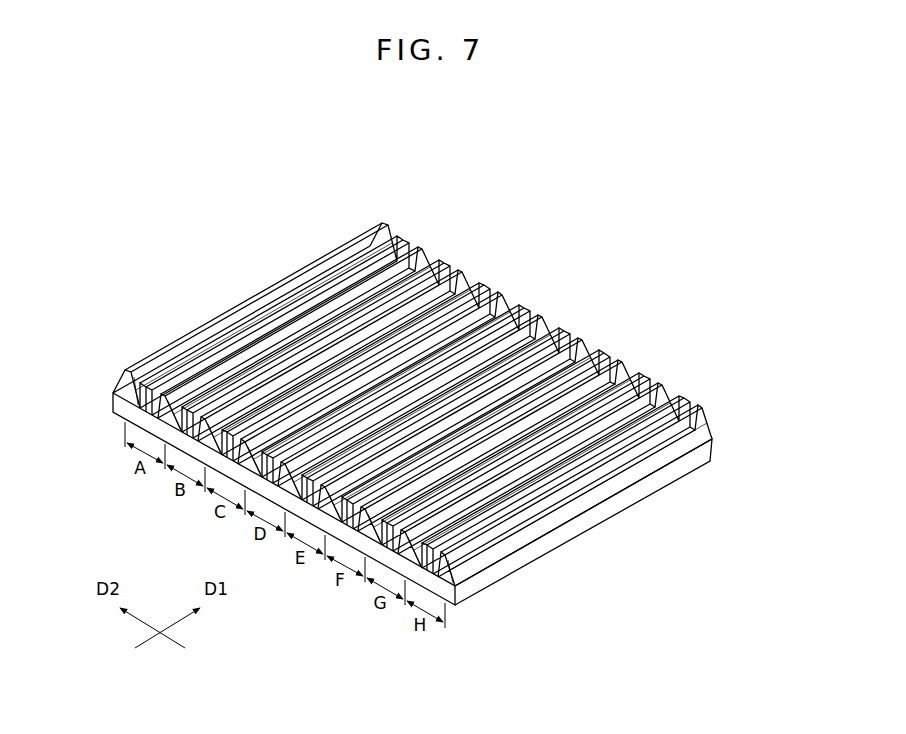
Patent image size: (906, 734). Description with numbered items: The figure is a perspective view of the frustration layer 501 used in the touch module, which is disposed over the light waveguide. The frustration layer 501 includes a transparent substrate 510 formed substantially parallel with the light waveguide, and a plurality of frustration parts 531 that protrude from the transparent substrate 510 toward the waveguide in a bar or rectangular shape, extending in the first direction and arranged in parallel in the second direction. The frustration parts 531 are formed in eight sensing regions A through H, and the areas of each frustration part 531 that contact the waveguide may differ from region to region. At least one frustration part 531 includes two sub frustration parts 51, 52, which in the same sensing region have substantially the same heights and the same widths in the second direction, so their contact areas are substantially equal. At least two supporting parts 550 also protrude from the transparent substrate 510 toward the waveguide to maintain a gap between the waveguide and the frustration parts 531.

The frustration layer 501 is at (276, 226).
The transparent substrate 510 is at (712, 448).
The frustration parts 531 is at (403, 170).
The sub frustration part 51 is at (397, 237).
The sub frustration part 52 is at (405, 243).
The supporting parts 550 is at (658, 390).